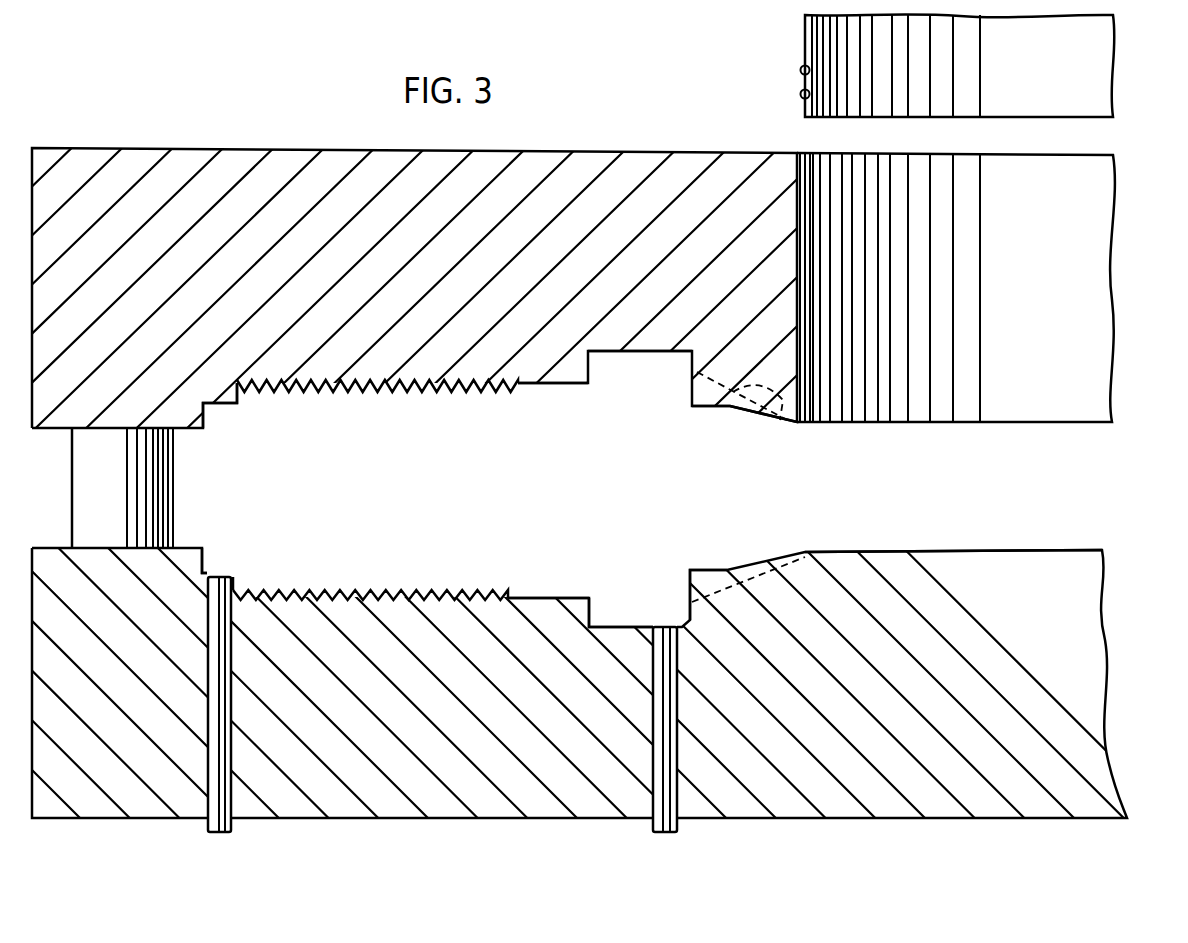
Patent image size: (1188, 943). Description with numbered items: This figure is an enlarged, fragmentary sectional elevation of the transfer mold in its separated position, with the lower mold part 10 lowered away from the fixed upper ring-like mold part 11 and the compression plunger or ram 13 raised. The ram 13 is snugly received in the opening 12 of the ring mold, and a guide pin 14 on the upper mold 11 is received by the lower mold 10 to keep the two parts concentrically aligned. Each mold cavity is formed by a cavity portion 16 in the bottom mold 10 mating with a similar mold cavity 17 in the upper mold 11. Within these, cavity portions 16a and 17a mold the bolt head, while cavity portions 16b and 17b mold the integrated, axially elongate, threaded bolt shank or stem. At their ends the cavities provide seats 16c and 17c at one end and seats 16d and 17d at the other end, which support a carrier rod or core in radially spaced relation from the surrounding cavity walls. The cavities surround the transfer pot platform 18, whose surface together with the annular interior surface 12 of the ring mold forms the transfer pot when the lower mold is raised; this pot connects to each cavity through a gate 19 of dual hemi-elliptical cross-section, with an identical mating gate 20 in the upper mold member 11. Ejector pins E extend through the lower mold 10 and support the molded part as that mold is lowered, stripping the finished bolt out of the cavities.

The lower mold part 10 is at (1083, 703).
The upper ring-like mold part 11 is at (590, 168).
The opening 12 is at (800, 200).
The compression plunger or ram 13 is at (995, 107).
The guide pin 14 is at (165, 495).
The cavity portion 16 is at (393, 590).
The cavity portion for molding a bolt head 16a is at (610, 622).
The cavity portion for molding a threaded bolt shank 16b is at (433, 590).
The seat 16c is at (207, 568).
The seat 16d is at (707, 570).
The mold cavity 17 is at (372, 392).
The cavity portion for molding a bolt head 17a is at (641, 354).
The cavity portion for molding a threaded bolt shank 17b is at (423, 392).
The seat 17c is at (222, 403).
The seat 17d is at (703, 408).
The transfer pot platform 18 is at (971, 550).
The gate 19 is at (750, 577).
The mating gate 20 is at (779, 426).
The ejector pin E is at (237, 596).